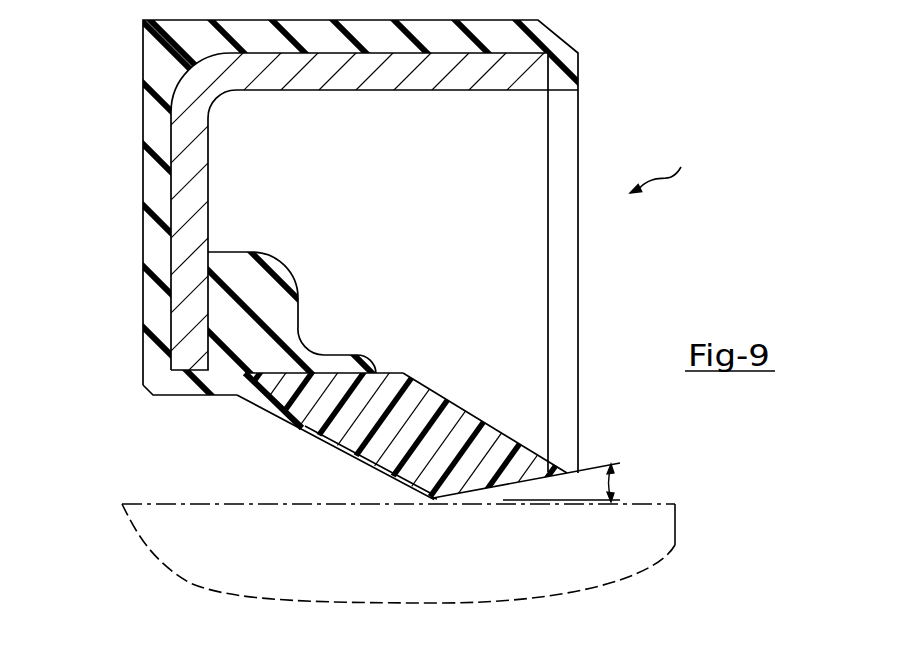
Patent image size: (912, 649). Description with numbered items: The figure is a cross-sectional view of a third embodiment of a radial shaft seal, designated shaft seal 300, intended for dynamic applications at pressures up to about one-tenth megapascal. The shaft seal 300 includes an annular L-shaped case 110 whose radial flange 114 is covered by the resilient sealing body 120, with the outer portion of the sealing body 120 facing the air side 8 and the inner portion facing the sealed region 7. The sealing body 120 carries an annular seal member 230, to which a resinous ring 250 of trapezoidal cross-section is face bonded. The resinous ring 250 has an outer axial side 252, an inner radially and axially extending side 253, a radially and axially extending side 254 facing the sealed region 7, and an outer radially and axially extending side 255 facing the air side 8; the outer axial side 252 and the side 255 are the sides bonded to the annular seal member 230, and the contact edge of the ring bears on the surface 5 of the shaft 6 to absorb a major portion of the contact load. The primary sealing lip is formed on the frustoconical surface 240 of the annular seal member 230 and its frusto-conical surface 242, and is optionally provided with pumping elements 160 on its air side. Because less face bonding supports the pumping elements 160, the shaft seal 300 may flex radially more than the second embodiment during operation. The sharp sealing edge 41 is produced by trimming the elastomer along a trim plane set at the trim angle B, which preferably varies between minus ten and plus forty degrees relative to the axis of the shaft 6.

The case 110 is at (524, 53).
The radial flange 114 is at (171, 132).
The sealing body 120 is at (146, 375).
The annular seal member 230 is at (305, 325).
The resinous ring 250 is at (413, 372).
The outer axial side 252 is at (342, 373).
The radially and axially extending side facing the sealed side 254 is at (470, 415).
The inner radially and axially extending side 253 is at (530, 483).
The outer radially and axially extending side 255 is at (304, 428).
The pumping elements 160 is at (348, 452).
The frustoconical surface 240 is at (382, 472).
The sealing edge 41 is at (432, 500).
The frusto-conical surface 242 is at (442, 499).
The surface 5 is at (643, 504).
The shaft 6 is at (662, 538).
The sealed region 7 is at (652, 243).
The air side 8 is at (89, 241).
The shaft seal 300 is at (668, 169).
The trim angle B is at (612, 487).